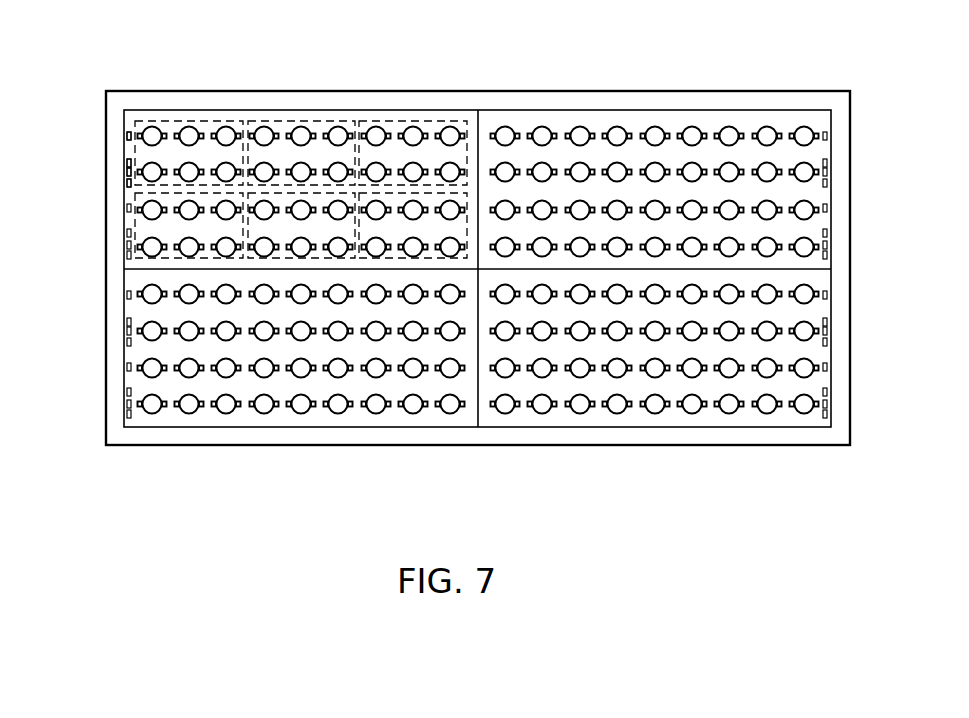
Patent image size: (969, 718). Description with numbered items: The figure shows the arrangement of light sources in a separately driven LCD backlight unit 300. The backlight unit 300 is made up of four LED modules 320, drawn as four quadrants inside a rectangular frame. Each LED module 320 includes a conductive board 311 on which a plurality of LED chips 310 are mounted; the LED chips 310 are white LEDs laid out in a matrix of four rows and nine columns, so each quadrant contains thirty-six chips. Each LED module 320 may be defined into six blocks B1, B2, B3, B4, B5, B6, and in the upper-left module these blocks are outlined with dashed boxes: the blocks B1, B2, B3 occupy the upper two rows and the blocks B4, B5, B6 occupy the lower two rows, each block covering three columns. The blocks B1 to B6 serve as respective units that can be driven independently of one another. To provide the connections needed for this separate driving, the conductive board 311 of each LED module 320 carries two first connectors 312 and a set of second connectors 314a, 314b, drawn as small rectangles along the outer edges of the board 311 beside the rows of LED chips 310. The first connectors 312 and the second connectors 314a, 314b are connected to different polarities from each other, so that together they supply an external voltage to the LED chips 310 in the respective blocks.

The LCD backlight unit 300 is at (827, 92).
The LED chips 310 is at (191, 136).
The conductive board 311 is at (158, 428).
The first connectors 312 is at (127, 136).
The second connector 314a is at (127, 163).
The second connector 314b is at (127, 172).
The LED module 320 is at (132, 111).
The block B1 is at (180, 122).
The block B2 is at (313, 122).
The block B3 is at (448, 122).
The block B4 is at (160, 258).
The block B5 is at (292, 257).
The block B6 is at (402, 258).